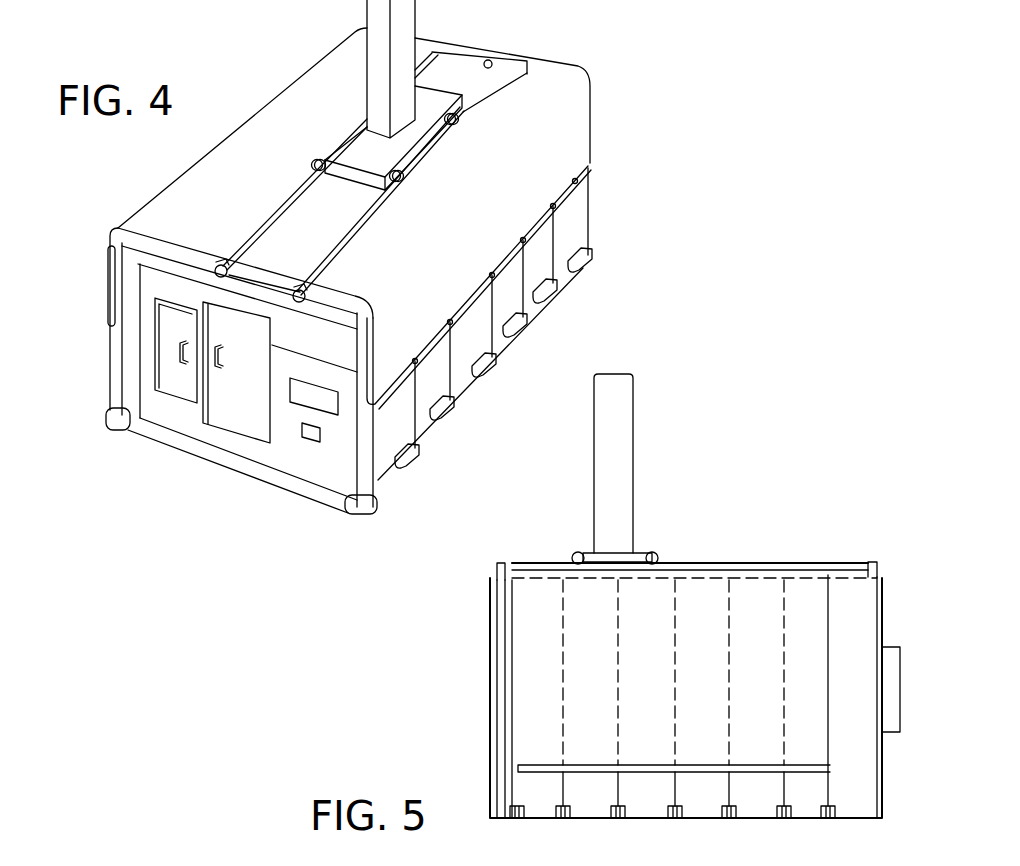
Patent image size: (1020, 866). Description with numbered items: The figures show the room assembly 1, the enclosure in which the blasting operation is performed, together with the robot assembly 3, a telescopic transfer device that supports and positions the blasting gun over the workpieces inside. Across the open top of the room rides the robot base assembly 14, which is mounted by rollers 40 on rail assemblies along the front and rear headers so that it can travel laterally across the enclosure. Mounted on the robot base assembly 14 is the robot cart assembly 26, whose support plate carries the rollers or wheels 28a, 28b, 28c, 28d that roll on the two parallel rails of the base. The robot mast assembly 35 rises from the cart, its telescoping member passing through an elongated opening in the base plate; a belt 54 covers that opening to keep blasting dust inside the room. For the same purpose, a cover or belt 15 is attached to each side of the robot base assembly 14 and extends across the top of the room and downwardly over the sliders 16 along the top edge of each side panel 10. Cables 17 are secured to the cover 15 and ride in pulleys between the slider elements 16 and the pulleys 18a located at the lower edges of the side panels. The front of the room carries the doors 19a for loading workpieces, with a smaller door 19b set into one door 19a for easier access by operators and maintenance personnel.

In FIG. 4, the room assembly 1 is at (312, 449).
In FIG. 5, the room assembly 1 is at (553, 708).
In FIG. 4, the robot assembly 3 is at (518, 52).
In FIG. 4, the side panel 10 is at (107, 423).
In FIG. 4, the robot base assembly 14 is at (267, 207).
In FIG. 5, the robot base assembly 14 is at (837, 562).
In FIG. 4, the cover or belt 15 is at (255, 123).
In FIG. 5, the cover or belt 15 is at (810, 620).
In FIG. 4, the slider 16 is at (108, 233).
In FIG. 4, the cable 17 is at (560, 242).
In FIG. 5, the cable 17 is at (727, 797).
In FIG. 4, the pulley 18a is at (553, 284).
In FIG. 5, the pulley 18a is at (622, 820).
In FIG. 4, the door 19a is at (240, 413).
In FIG. 4, the smaller door 19b is at (173, 383).
In FIG. 4, the robot cart assembly 26 is at (474, 61).
In FIG. 5, the robot cart assembly 26 is at (612, 552).
In FIG. 4, the roller or wheel 28a is at (415, 177).
In FIG. 4, the roller or wheel 28b is at (470, 125).
In FIG. 5, the roller or wheel 28c is at (576, 553).
In FIG. 4, the roller or wheel 28d is at (321, 160).
In FIG. 5, the roller or wheel 28d is at (656, 552).
In FIG. 4, the robot mast assembly 35 is at (391, 69).
In FIG. 5, the robot mast assembly 35 is at (625, 444).
In FIG. 4, the roller 40 is at (219, 265).
In FIG. 5, the roller 40 is at (502, 563).
In FIG. 4, the belt 54 is at (312, 218).